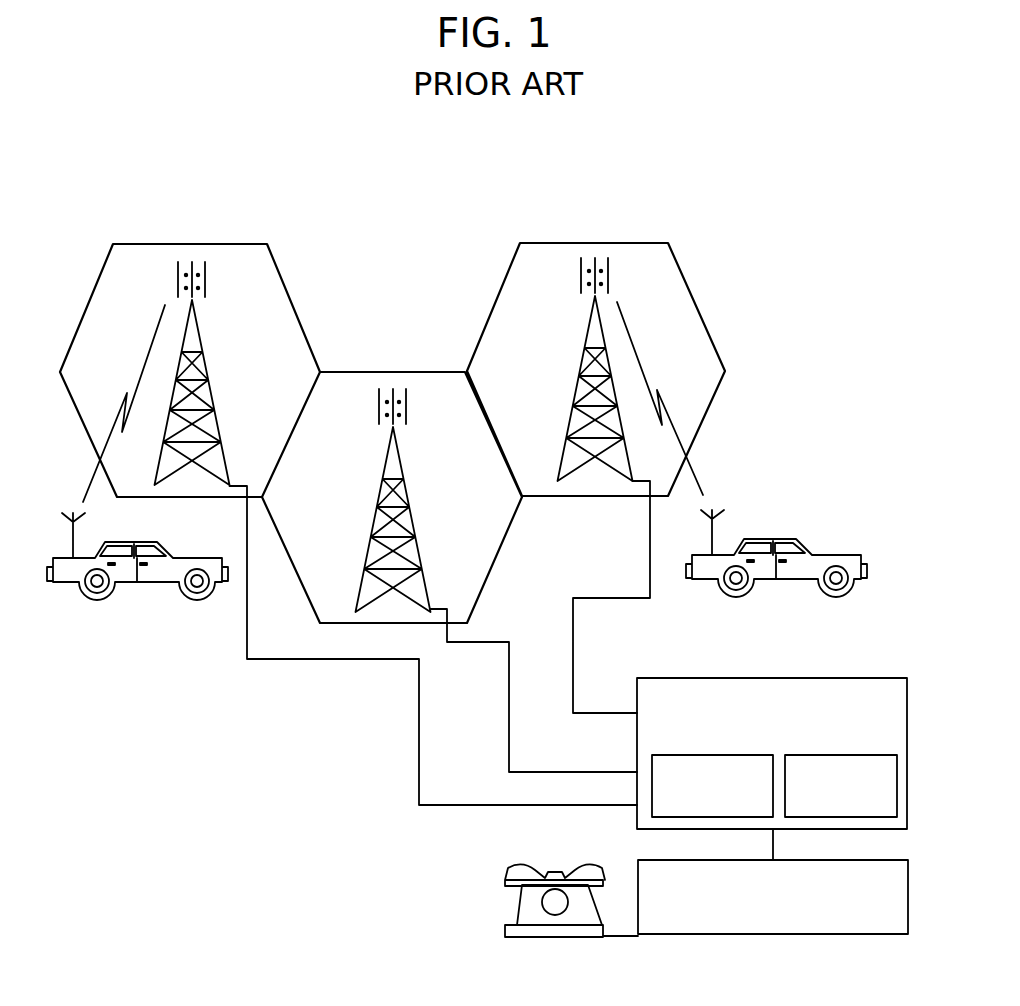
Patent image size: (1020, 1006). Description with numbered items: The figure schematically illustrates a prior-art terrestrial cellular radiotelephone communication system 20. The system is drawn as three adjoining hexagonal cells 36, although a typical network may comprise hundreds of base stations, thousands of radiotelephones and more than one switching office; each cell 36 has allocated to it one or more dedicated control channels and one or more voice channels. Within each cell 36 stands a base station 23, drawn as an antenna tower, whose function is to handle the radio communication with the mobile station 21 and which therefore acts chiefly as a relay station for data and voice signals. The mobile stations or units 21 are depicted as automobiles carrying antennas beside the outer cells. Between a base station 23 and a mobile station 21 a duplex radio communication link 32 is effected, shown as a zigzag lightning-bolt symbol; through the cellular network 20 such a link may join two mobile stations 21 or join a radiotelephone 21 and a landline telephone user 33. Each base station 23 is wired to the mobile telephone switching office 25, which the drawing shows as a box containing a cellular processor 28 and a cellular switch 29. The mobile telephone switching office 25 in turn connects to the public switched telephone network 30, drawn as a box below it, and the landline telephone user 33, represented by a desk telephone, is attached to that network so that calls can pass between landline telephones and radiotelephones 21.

The cellular radiotelephone communication system 20 is at (690, 240).
The mobile station 21 is at (158, 583).
The base station 23 is at (213, 348).
The mobile telephone switching office 25 is at (872, 675).
The cellular processor 28 is at (672, 753).
The cellular switch 29 is at (877, 752).
The public switched telephone network 30 is at (868, 937).
The duplex radio communication link 32 is at (150, 352).
The landline telephone user 33 is at (510, 912).
The cell 36 is at (98, 285).